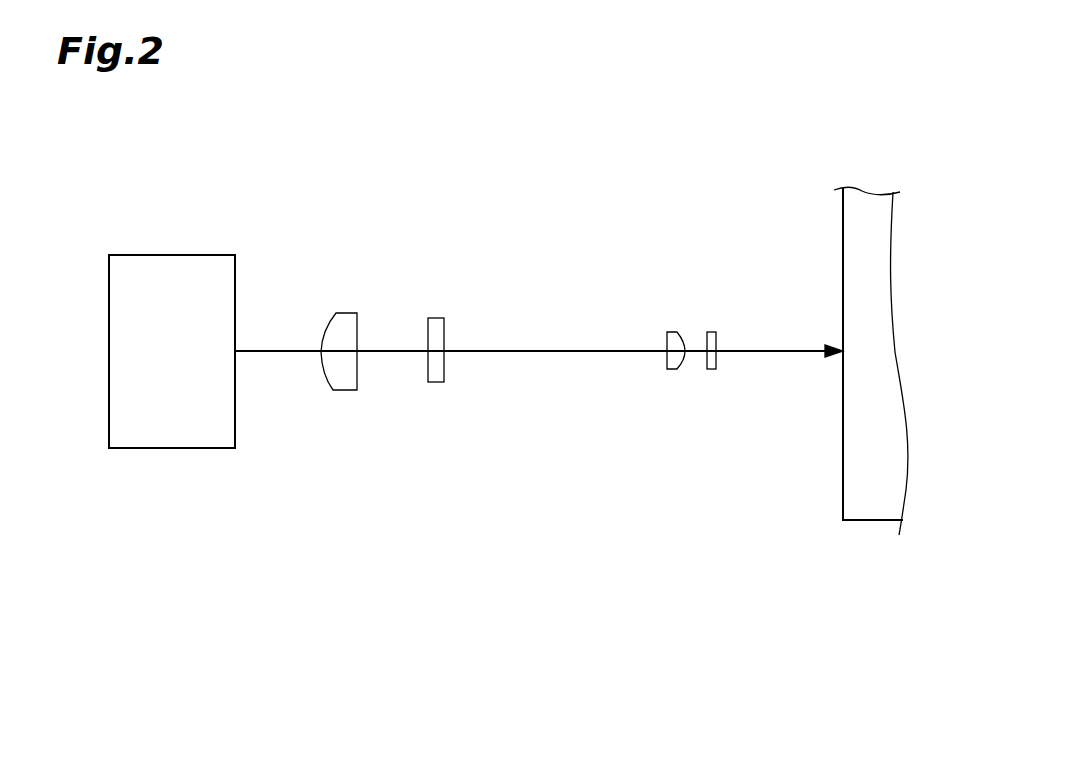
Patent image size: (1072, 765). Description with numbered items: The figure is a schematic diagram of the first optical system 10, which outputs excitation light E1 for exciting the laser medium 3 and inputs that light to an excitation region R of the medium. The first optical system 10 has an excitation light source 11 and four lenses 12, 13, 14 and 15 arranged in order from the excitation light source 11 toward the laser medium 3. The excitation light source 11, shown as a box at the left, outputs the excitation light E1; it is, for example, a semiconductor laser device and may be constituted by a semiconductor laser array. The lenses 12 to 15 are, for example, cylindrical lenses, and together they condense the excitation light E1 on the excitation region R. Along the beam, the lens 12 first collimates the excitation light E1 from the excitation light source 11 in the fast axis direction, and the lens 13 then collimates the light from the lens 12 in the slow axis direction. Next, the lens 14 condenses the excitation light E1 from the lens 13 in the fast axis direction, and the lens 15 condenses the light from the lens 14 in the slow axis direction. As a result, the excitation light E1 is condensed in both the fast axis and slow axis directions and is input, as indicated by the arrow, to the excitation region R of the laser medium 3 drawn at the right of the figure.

The first optical system 10 is at (779, 152).
The excitation light source 11 is at (170, 448).
The lens 12 is at (345, 390).
The lens 13 is at (436, 382).
The lens 14 is at (672, 369).
The lens 15 is at (712, 369).
The laser medium 3 is at (882, 250).
The excitation region R is at (851, 346).
The excitation light E1 is at (578, 350).